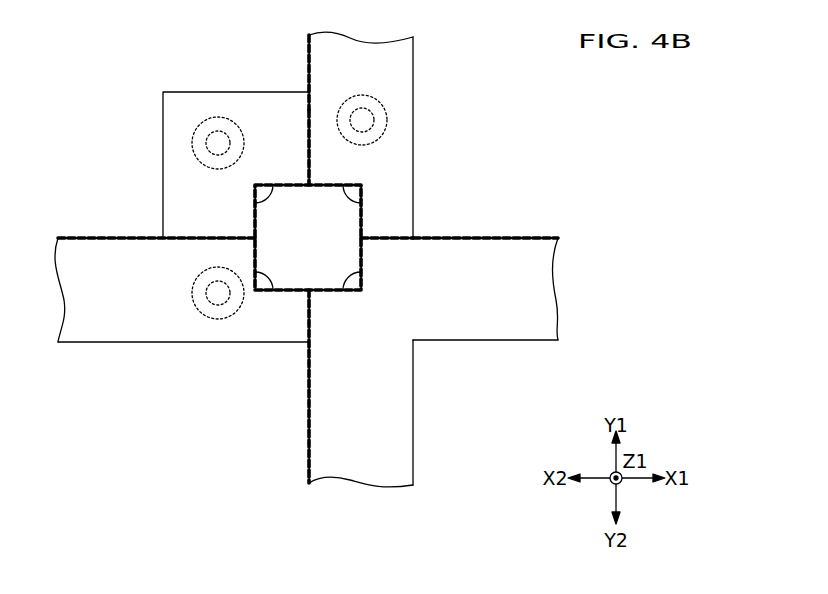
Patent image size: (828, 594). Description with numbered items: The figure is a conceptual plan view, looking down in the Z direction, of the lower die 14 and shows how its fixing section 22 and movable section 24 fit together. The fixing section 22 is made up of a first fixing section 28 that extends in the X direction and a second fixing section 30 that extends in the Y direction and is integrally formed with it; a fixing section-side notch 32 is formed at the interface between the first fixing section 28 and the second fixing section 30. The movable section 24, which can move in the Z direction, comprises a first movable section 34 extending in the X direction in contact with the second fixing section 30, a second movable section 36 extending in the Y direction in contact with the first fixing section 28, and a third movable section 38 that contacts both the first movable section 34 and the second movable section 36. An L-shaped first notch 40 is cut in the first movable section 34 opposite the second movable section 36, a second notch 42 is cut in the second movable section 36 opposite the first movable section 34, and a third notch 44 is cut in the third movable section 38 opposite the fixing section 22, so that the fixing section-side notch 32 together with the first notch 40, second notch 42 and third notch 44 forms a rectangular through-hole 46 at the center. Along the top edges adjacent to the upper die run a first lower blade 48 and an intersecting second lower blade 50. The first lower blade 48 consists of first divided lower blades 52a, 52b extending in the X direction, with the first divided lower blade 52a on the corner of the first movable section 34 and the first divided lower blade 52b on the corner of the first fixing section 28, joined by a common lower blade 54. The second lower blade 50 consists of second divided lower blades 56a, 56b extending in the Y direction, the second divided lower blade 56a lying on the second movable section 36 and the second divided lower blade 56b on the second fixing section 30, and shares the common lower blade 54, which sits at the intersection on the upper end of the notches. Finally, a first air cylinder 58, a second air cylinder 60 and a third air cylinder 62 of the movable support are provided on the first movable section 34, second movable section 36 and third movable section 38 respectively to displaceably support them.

The lower die 14 is at (463, 60).
The fixing section 22 is at (505, 369).
The movable section 24 is at (90, 108).
The first fixing section 28 is at (464, 323).
The second fixing section 30 is at (392, 419).
The fixing section-side notch 32 is at (344, 290).
The first movable section 34 is at (130, 238).
The second movable section 36 is at (337, 100).
The third movable section 38 is at (176, 143).
The first notch 40 is at (272, 290).
The second notch 42 is at (343, 185).
The third notch 44 is at (272, 185).
The rectangular through-hole 46 is at (338, 236).
The first lower blade 48 is at (512, 234).
The second lower blade 50 is at (304, 78).
The first divided lower blade 52a is at (83, 248).
The first divided lower blade 52b is at (500, 246).
The common lower blade 54 is at (368, 193).
The second divided lower blade 56a is at (311, 53).
The second divided lower blade 56b is at (313, 427).
The first air cylinder 58 is at (192, 295).
The second air cylinder 60 is at (378, 99).
The third air cylinder 62 is at (217, 169).